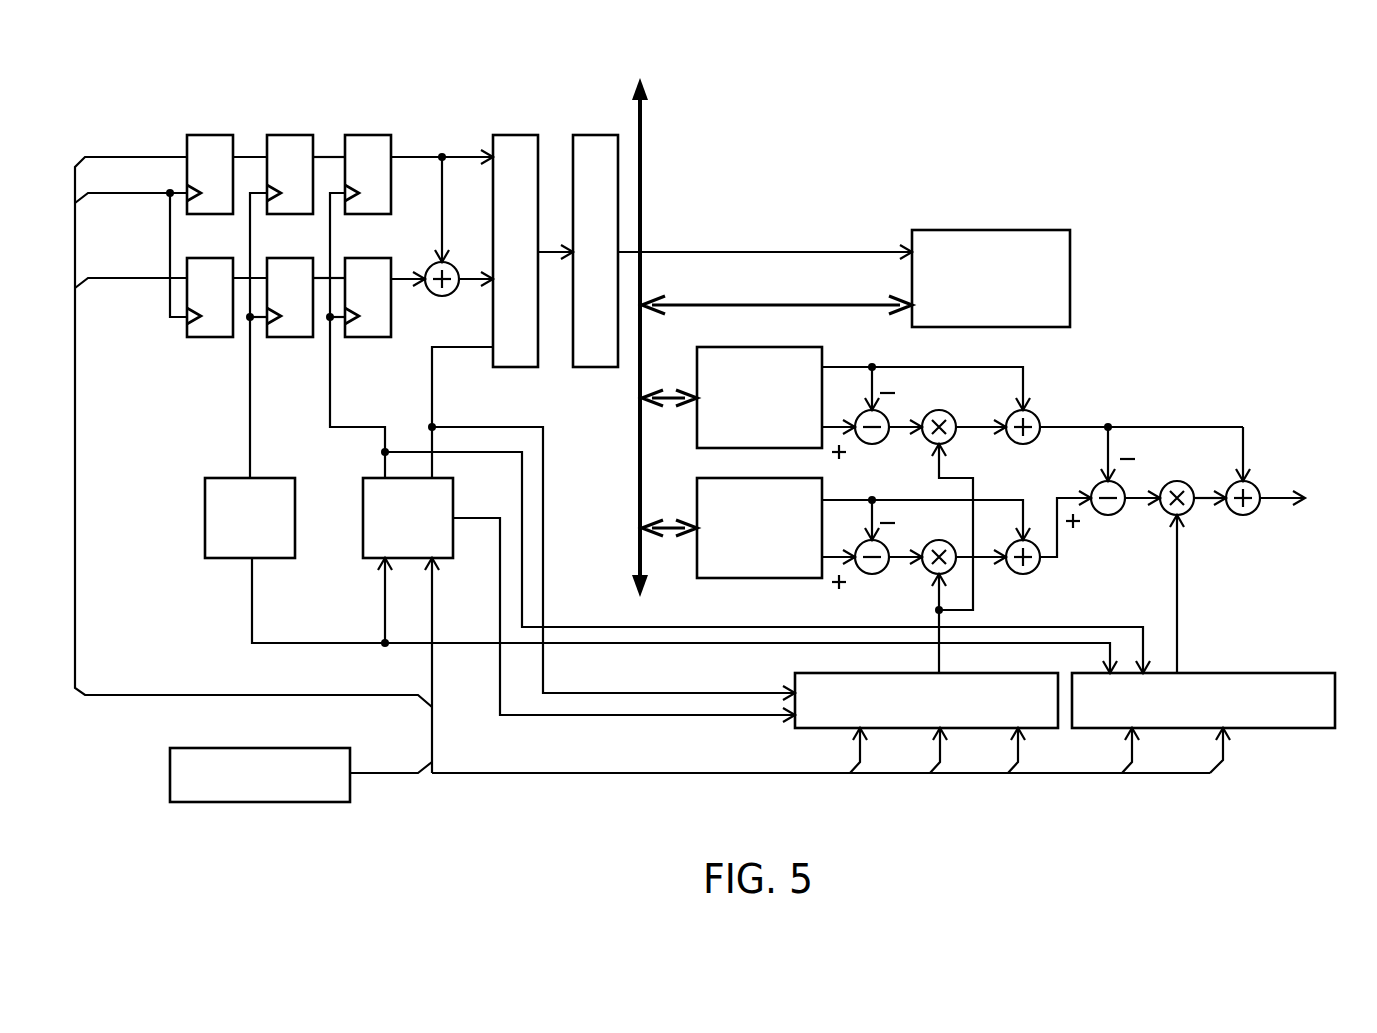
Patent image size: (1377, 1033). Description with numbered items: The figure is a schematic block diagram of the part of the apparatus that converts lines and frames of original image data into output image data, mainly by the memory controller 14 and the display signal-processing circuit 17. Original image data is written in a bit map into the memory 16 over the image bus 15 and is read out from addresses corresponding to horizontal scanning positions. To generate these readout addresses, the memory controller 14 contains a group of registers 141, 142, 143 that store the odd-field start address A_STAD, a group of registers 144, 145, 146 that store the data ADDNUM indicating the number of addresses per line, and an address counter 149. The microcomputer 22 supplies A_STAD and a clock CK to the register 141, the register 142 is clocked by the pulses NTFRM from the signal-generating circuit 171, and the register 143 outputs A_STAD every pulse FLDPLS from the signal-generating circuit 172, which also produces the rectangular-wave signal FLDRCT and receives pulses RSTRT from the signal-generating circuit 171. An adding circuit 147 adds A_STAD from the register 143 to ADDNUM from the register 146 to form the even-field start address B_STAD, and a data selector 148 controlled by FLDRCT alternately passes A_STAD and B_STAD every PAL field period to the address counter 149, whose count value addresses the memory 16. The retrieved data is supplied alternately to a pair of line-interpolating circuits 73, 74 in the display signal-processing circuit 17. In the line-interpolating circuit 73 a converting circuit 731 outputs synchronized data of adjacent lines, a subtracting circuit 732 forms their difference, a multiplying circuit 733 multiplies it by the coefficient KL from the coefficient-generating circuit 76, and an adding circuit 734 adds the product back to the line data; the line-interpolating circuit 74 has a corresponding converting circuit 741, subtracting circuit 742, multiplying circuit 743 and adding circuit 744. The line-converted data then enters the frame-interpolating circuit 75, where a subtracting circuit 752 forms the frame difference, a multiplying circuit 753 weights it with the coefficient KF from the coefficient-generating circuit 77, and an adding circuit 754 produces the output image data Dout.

The memory controller 14 is at (241, 72).
The register 141 is at (200, 135).
The register 142 is at (280, 135).
The register 143 is at (358, 135).
The register 144 is at (200, 258).
The register 145 is at (280, 258).
The register 146 is at (358, 258).
The adding circuit 147 is at (456, 262).
The data selector 148 is at (505, 135).
The address counter 149 is at (585, 135).
The image bus 15 is at (641, 167).
The memory 16 is at (1070, 266).
The display signal-processing circuit 17 is at (603, 507).
The signal-generating circuit 171 is at (205, 521).
The signal-generating circuit 172 is at (363, 531).
The microcomputer 22 is at (228, 748).
The line-interpolating circuit 73 is at (1063, 375).
The converting circuit 731 is at (737, 347).
The subtracting circuit 732 is at (875, 445).
The multiplying circuit 733 is at (948, 412).
The adding circuit 734 is at (1026, 445).
The line-interpolating circuit 74 is at (1101, 617).
The converting circuit 741 is at (737, 578).
The subtracting circuit 742 is at (875, 575).
The multiplying circuit 743 is at (944, 541).
The adding circuit 744 is at (1026, 575).
The frame-interpolating circuit 75 is at (1211, 402).
The subtracting circuit 752 is at (1111, 516).
The multiplying circuit 753 is at (1178, 481).
The adding circuit 754 is at (1246, 516).
The coefficient-generating circuit 76 is at (890, 673).
The coefficient-generating circuit 77 is at (1233, 673).